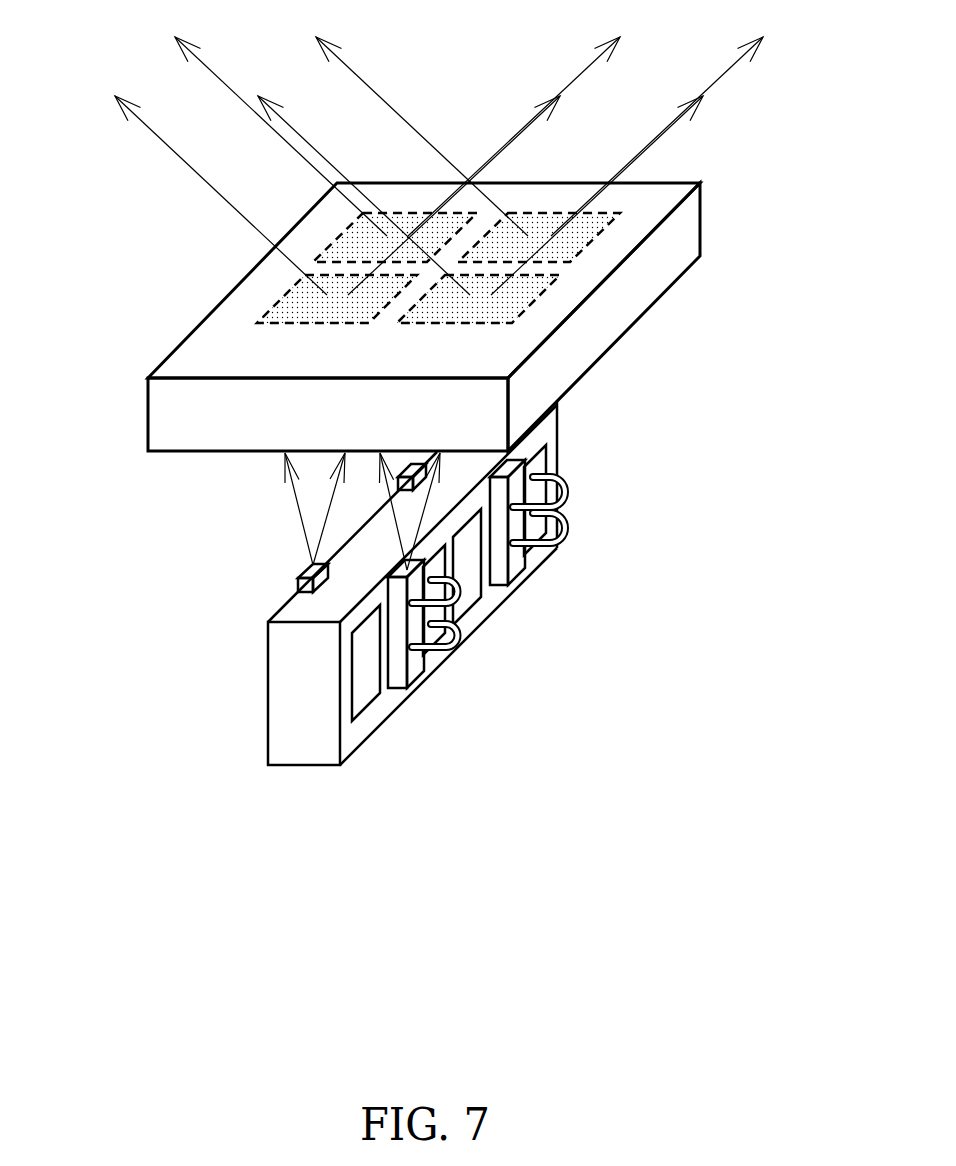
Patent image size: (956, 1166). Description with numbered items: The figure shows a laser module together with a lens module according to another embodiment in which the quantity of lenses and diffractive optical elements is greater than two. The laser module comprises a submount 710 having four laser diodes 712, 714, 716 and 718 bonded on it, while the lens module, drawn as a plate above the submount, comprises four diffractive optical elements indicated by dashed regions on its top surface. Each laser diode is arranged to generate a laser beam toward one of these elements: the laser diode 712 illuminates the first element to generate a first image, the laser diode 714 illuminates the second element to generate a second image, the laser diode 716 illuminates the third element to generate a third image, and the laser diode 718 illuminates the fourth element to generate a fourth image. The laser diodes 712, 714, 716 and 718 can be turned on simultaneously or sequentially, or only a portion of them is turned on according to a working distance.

The submount 710 is at (292, 740).
The laser diode 712 is at (415, 667).
The laser diode 714 is at (517, 563).
The laser diode 716 is at (298, 572).
The laser diode 718 is at (405, 463).